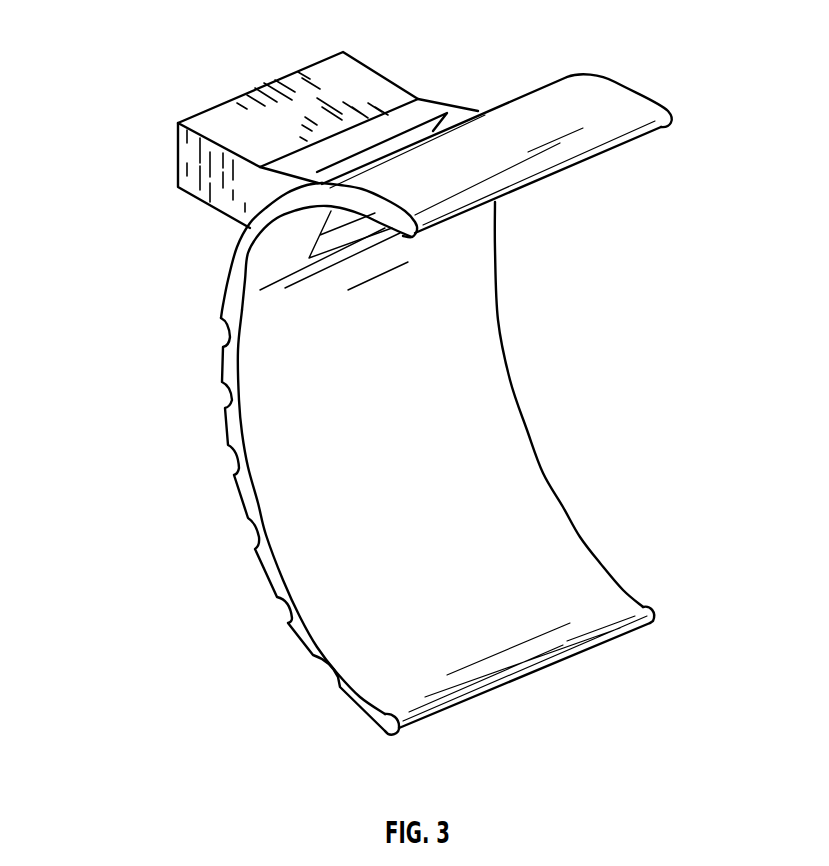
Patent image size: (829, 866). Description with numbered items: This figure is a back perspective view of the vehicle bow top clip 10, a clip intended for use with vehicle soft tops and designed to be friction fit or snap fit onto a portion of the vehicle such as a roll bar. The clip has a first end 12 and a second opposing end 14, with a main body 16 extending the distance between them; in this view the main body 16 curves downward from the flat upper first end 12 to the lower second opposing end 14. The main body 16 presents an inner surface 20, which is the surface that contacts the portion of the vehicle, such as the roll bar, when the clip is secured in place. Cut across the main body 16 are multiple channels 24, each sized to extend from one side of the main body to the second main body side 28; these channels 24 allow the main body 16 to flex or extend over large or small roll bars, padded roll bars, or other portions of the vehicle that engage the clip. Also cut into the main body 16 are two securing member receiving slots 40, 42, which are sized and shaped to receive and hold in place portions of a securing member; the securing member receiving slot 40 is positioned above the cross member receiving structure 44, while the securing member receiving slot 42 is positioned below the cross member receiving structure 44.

The vehicle bow top clip 10 is at (80, 168).
The first end 12 is at (663, 130).
The second opposing end 14 is at (655, 608).
The main body 16 is at (578, 547).
The inner surface 20 is at (403, 449).
The channels 24 is at (260, 533).
The second main body side 28 is at (233, 298).
The securing member receiving slot 40 is at (433, 118).
The securing member receiving slot 42 is at (325, 245).
The cross member receiving structure 44 is at (363, 57).